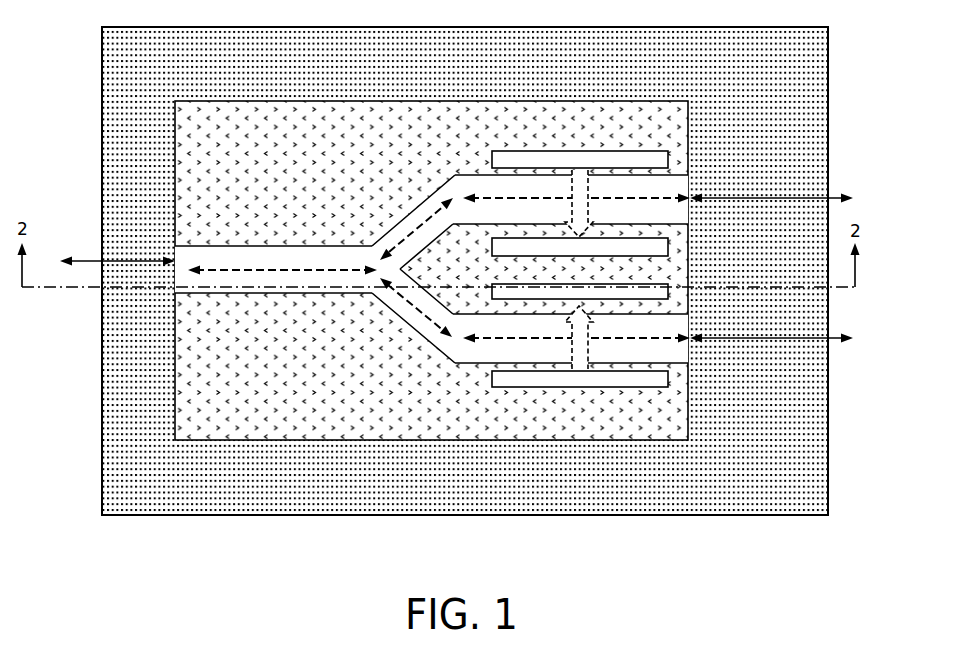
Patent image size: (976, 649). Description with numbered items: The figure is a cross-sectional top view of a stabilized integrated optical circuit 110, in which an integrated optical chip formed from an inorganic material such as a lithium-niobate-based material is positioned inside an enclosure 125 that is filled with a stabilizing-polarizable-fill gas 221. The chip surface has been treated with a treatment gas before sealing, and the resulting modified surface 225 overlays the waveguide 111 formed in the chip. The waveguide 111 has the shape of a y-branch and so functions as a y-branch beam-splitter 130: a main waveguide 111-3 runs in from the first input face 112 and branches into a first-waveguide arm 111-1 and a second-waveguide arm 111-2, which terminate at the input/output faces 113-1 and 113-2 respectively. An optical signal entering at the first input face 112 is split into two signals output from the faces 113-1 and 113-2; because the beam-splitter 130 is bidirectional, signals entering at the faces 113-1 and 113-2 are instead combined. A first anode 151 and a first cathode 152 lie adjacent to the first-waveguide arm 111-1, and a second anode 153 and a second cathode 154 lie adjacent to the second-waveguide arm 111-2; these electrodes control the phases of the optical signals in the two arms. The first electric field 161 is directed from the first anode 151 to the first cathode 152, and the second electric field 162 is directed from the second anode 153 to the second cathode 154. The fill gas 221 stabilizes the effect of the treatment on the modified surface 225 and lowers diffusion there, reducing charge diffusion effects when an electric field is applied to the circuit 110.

The stabilized integrated optical circuit 110 is at (295, 100).
The waveguide 111 is at (362, 245).
The first-waveguide arm 111-1 is at (678, 175).
The second-waveguide arm 111-2 is at (483, 363).
The main waveguide 111-3 is at (338, 275).
The first input face 112 is at (170, 281).
The input/output face of the first-waveguide arm 113-1 is at (710, 177).
The input/output face of the second-waveguide arm 113-2 is at (712, 355).
The enclosure 125 is at (270, 516).
The y-branch beam-splitter 130 is at (295, 255).
The first anode 151 is at (578, 150).
The first cathode 152 is at (668, 250).
The second anode 153 is at (570, 388).
The second cathode 154 is at (668, 292).
The first electric field 161 is at (572, 200).
The second electric field 162 is at (572, 347).
The stabilizing-polarizable-fill gas 221 is at (407, 77).
The modified surface 225 is at (240, 137).